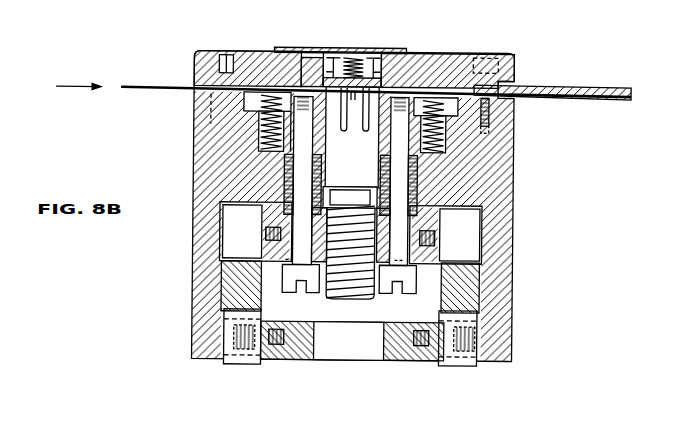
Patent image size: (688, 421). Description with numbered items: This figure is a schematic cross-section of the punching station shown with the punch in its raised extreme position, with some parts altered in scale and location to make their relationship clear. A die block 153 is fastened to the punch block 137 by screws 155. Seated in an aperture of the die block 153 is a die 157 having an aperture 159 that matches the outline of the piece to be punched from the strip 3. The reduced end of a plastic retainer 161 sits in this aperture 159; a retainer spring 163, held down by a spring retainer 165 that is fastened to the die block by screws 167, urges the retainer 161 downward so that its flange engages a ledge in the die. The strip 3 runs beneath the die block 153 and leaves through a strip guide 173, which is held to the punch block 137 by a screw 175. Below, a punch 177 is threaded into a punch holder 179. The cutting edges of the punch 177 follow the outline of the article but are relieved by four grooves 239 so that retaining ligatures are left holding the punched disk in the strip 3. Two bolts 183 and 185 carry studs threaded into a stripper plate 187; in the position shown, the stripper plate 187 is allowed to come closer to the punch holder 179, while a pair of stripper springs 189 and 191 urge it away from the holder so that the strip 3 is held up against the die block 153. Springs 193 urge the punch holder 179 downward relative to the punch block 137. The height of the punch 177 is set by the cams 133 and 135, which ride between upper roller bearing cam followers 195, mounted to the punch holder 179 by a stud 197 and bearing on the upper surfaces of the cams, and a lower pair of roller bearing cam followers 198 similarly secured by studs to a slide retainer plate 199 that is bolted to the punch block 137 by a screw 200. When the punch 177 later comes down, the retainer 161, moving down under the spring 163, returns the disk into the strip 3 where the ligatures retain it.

The strip 3 is at (158, 87).
The cam 133 is at (258, 296).
The cam 135 is at (444, 300).
The punch block 137 is at (513, 150).
The die block 153 is at (455, 51).
The screw 155 is at (204, 112).
The die 157 is at (400, 51).
The aperture 159 is at (325, 53).
The retainer 161 is at (373, 53).
The retainer spring 163 is at (356, 53).
The spring retainer 165 is at (293, 49).
The screw 167 is at (268, 53).
The strip guide 173 is at (583, 84).
The screw 175 is at (490, 113).
The punch 177 is at (367, 185).
The punch holder 179 is at (430, 209).
The bolt 183 is at (291, 160).
The bolt 185 is at (411, 153).
The stripper plate 187 is at (251, 130).
The stripper spring 189 is at (266, 149).
The stripper spring 191 is at (449, 130).
The spring 193 is at (289, 189).
The roller bearing cam follower 195 is at (472, 230).
The stud 197 is at (264, 240).
The roller bearing cam follower 198 is at (254, 228).
The slide retainer plate 199 is at (403, 365).
The screw 200 is at (243, 366).
The groove 239 is at (365, 127).